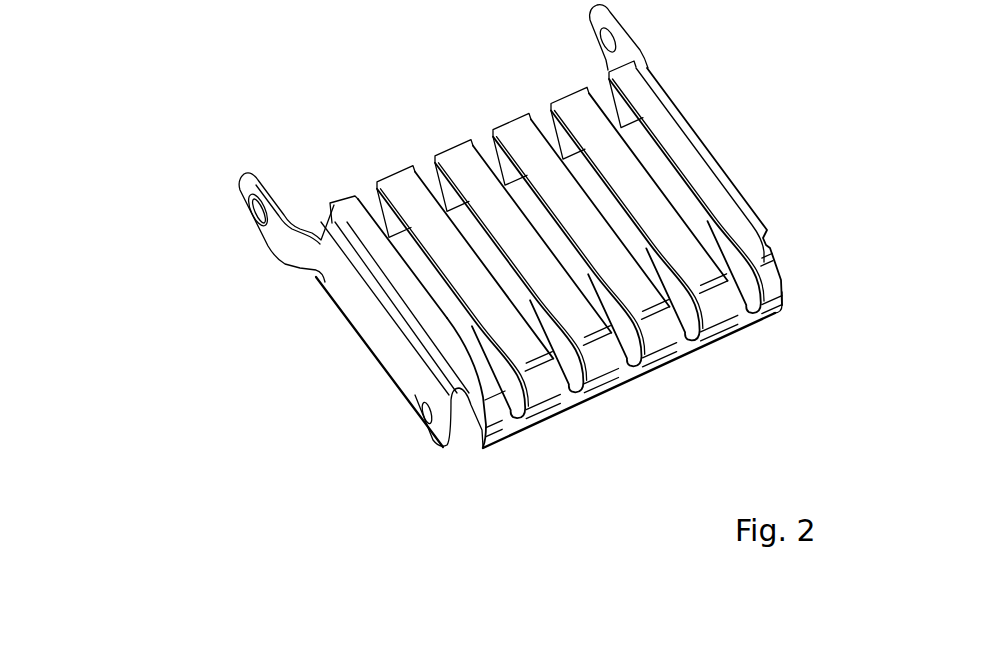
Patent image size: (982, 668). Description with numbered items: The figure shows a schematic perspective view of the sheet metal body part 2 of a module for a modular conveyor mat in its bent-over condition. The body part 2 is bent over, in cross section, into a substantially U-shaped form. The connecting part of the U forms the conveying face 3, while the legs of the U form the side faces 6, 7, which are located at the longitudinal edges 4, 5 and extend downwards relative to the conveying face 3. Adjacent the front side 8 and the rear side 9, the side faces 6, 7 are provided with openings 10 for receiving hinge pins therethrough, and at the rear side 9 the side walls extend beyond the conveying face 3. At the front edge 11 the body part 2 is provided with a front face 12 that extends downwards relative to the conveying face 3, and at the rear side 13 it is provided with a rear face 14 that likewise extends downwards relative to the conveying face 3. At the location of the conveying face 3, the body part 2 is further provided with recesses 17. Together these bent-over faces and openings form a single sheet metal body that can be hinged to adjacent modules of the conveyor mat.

The sheet metal body part 2 is at (718, 128).
The conveying face 3 is at (531, 151).
The longitudinal edge 4 is at (365, 267).
The longitudinal edge 5 is at (663, 97).
The side face 6 is at (362, 307).
The side face 7 is at (773, 253).
The front side 8 is at (611, 413).
The rear side 9 is at (377, 157).
The openings 10 is at (258, 212).
The front edge 11 is at (484, 398).
The front face 12 is at (541, 389).
The rear side 13 is at (338, 204).
The rear face 14 is at (491, 162).
The recesses 17 is at (624, 343).